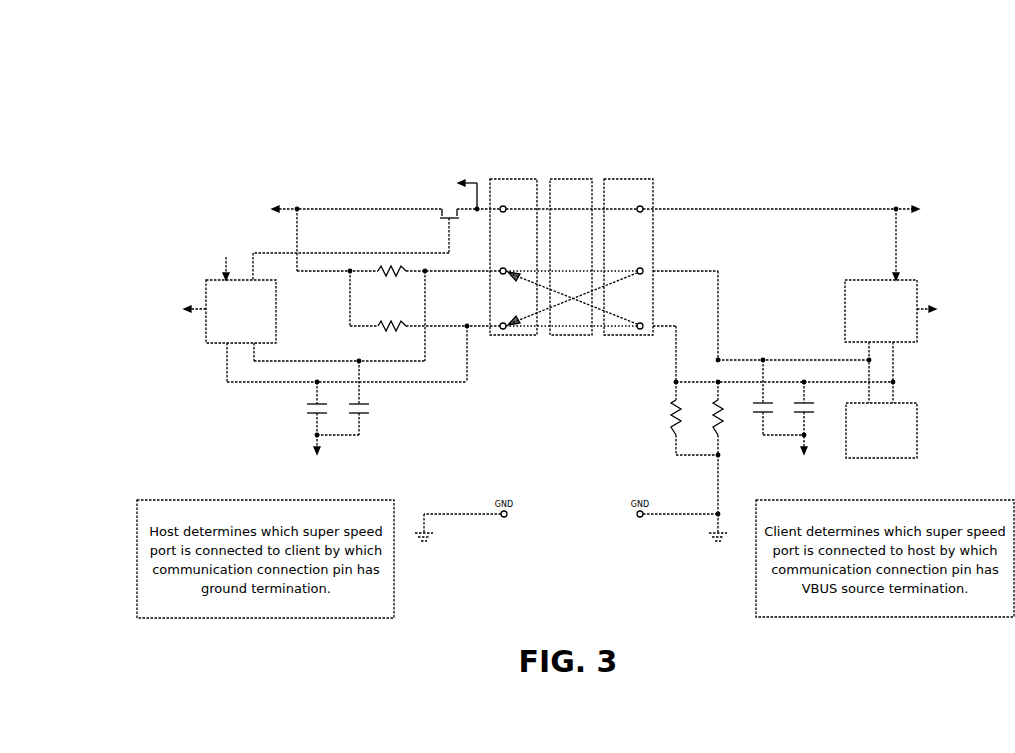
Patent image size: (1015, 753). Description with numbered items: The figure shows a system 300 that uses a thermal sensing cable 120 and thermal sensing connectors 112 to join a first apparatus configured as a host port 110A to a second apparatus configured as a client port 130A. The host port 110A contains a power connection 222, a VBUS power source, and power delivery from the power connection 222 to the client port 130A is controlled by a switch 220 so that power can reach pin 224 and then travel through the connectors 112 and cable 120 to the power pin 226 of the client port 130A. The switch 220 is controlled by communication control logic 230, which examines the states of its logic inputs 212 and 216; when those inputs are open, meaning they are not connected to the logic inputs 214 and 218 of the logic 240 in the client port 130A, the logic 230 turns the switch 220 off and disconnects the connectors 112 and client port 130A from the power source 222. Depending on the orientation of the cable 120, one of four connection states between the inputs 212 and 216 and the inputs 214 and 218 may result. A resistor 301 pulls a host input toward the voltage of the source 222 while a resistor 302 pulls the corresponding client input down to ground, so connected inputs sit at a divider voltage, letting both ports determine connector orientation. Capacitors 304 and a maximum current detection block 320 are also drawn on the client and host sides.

The system 300 is at (577, 61).
The host port 110A is at (333, 143).
The client port 130A is at (802, 149).
The connector 112 is at (571, 247).
The cable 120 is at (571, 263).
The power connection 222 is at (321, 204).
The switch 220 is at (445, 231).
The pin 224 is at (462, 194).
The power pin 226 is at (797, 236).
The logic input 212 is at (453, 267).
The logic input 216 is at (453, 320).
The logic input 214 is at (686, 309).
The logic input 218 is at (670, 347).
The communication control logic 230 is at (201, 288).
The logic 240 is at (914, 275).
The resistor 301 is at (351, 305).
The resistor 302 is at (687, 448).
The capacitors 304 is at (560, 416).
The maximum current detection 320 is at (913, 399).